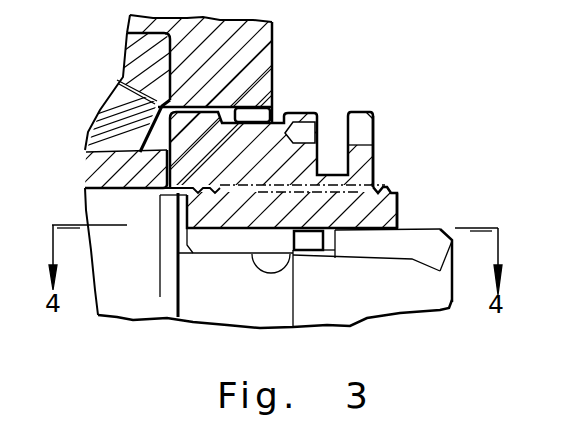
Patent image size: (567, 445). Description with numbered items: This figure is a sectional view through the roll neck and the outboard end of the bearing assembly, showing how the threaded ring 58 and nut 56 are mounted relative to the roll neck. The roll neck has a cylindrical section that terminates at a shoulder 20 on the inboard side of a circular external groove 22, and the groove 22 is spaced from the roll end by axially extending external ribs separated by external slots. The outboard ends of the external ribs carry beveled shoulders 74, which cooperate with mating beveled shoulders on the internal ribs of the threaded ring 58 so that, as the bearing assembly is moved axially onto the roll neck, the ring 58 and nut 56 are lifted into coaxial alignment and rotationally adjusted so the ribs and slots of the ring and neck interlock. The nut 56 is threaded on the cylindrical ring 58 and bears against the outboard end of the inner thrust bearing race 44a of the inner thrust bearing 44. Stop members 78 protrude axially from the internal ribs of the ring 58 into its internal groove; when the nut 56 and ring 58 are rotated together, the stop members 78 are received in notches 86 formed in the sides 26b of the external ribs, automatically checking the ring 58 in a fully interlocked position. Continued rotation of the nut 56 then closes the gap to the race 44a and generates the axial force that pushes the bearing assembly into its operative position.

The shoulder 20 is at (178, 310).
The circular external groove 22 is at (240, 307).
The rib side 26b is at (394, 250).
The inner thrust bearing 44 is at (86, 105).
The inner thrust bearing race 44a is at (96, 175).
The nut 56 is at (277, 135).
The cylindrical ring 58 is at (397, 193).
The beveled shoulder 74 is at (449, 230).
The stop member 78 is at (306, 253).
The notch 86 is at (328, 252).